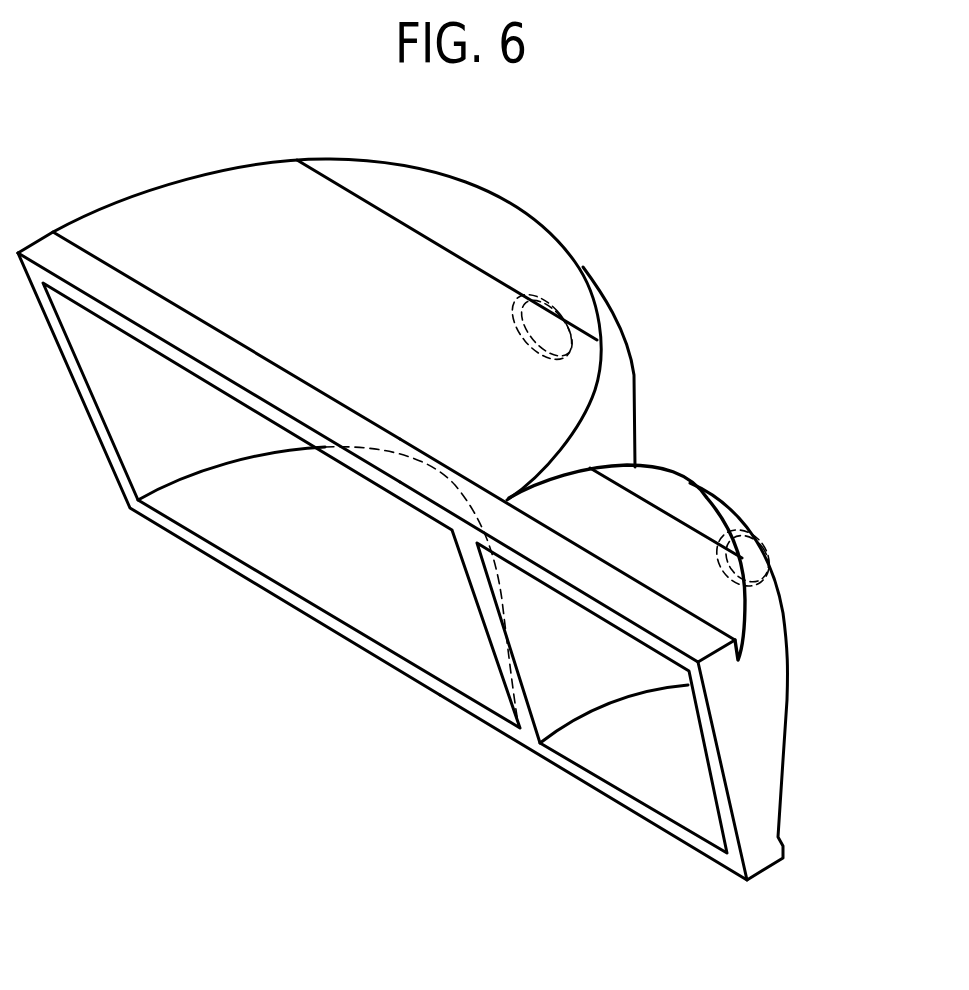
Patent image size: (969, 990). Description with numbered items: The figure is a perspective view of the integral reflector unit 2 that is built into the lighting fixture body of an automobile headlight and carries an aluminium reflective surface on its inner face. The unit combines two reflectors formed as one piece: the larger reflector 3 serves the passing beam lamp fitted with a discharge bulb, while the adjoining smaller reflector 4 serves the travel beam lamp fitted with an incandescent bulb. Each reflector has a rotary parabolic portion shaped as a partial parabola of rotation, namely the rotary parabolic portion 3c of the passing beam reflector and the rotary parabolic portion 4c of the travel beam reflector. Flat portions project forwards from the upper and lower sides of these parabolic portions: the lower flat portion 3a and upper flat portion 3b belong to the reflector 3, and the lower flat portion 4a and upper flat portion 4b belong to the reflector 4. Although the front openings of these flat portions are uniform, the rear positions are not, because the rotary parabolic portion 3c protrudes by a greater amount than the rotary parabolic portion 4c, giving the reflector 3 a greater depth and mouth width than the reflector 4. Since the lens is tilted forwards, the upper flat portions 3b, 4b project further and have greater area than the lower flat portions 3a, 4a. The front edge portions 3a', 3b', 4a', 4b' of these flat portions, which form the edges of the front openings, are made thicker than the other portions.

The reflector unit 2 is at (669, 356).
The reflector 3 is at (503, 203).
The flat portion 3a is at (281, 505).
The front edge portion 3a' is at (229, 502).
The flat portion 3b is at (328, 247).
The front edge portion 3b' is at (209, 357).
The rotary parabolic portion 3c is at (563, 275).
The reflector 4 is at (702, 490).
The flat portion 4a is at (602, 713).
The front edge portion 4a' is at (593, 801).
The flat portion 4b is at (750, 543).
The front edge portion 4b' is at (640, 550).
The rotary parabolic portion 4c is at (663, 487).